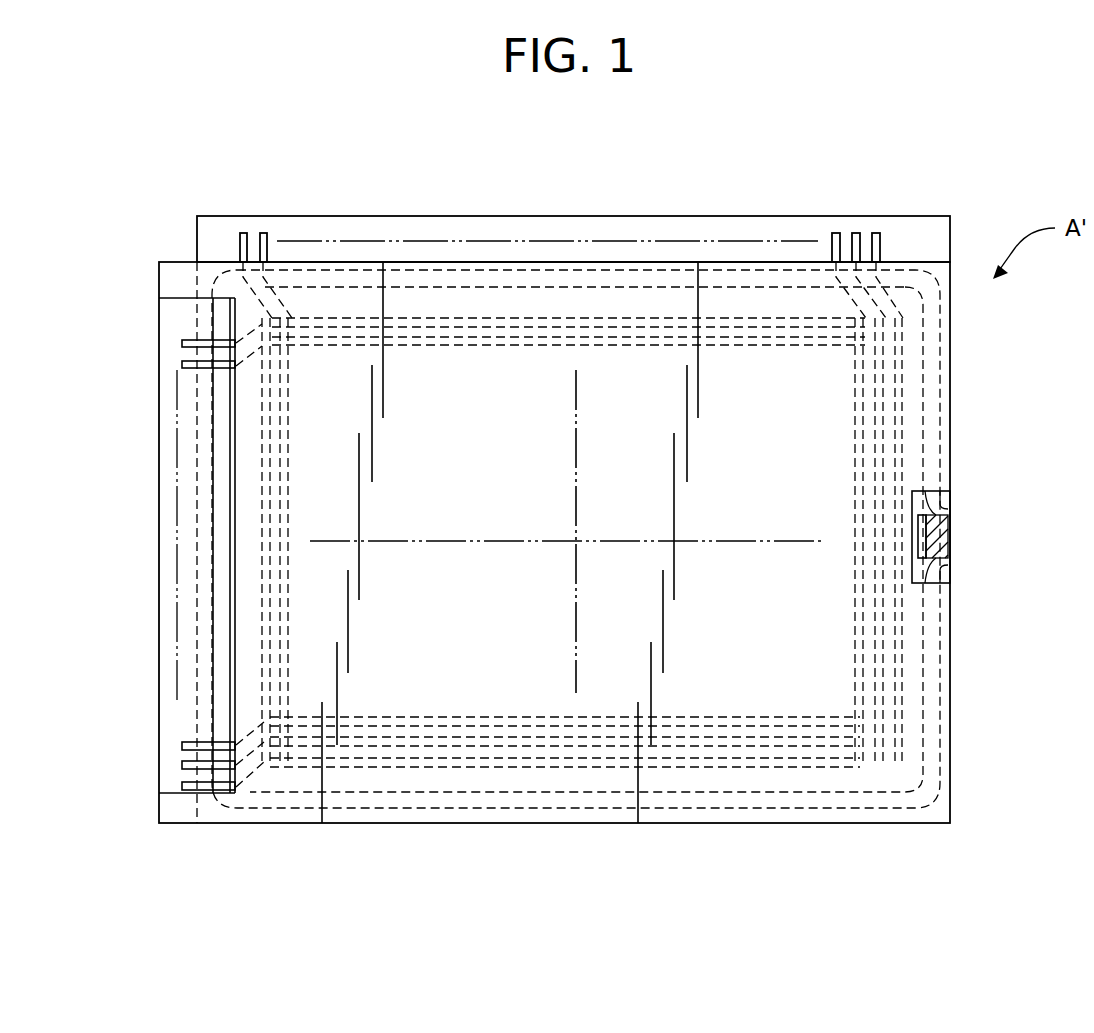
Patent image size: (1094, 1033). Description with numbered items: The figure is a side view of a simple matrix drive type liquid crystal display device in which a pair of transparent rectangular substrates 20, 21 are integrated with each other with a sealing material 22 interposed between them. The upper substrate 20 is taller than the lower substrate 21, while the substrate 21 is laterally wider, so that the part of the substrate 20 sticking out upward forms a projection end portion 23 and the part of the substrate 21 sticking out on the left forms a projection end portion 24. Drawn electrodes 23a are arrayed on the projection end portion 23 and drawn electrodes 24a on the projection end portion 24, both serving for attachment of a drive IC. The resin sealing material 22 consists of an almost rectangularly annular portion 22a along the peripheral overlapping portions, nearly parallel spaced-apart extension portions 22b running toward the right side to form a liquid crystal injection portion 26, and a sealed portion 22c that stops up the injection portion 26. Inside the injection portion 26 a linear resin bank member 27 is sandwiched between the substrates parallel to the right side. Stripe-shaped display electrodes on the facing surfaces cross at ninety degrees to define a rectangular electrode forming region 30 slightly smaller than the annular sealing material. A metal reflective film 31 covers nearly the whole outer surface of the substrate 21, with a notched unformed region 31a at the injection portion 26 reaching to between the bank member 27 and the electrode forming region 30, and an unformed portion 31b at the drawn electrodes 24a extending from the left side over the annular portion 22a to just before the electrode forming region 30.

The substrate 20 is at (800, 216).
The substrate 21 is at (522, 266).
The sealing material 22 is at (948, 336).
The annular portion 22a is at (932, 398).
The extension portions 22b is at (945, 507).
The sealed portion 22c is at (940, 540).
The projection end portion 23 is at (624, 233).
The drawn electrodes 23a is at (262, 233).
The projection end portion 24 is at (166, 458).
The drawn electrodes 24a is at (183, 344).
The liquid crystal injection portion 26 is at (912, 568).
The bank member 27 is at (922, 540).
The electrode forming region 30 is at (495, 688).
The metal reflective film 31 is at (623, 684).
The unformed region of the metal reflective film 31a is at (950, 475).
The unformed portion of the metal reflective film 31b is at (150, 605).